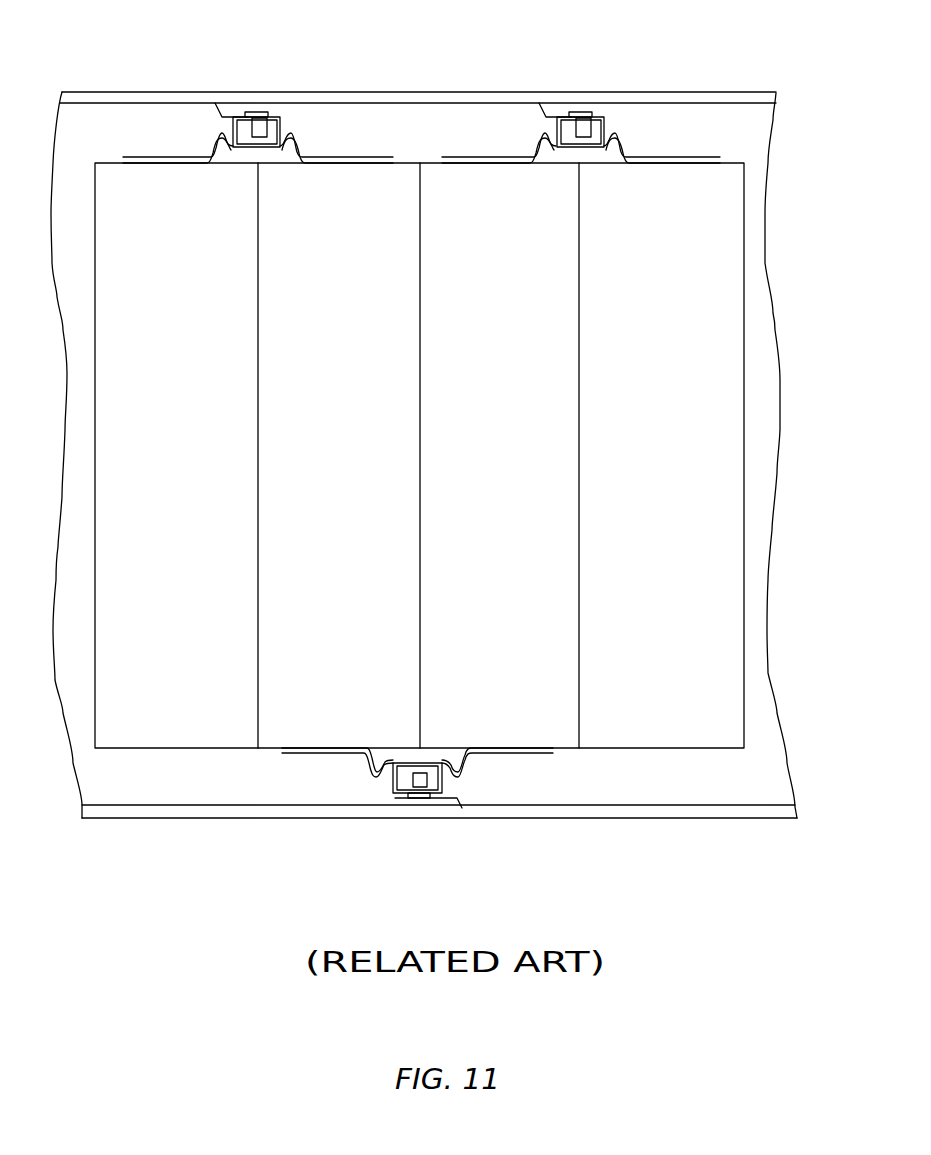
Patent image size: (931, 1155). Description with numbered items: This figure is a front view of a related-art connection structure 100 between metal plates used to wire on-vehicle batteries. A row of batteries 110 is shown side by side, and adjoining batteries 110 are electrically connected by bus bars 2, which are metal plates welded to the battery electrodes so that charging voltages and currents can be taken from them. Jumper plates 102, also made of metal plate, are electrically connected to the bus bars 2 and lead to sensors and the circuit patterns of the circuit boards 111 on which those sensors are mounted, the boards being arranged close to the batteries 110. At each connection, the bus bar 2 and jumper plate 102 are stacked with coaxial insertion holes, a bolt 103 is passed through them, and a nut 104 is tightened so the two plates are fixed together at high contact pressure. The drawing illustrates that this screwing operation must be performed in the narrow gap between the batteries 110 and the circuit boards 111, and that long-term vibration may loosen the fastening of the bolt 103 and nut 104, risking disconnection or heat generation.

The bus bar 2 is at (362, 157).
The connection structure 100 is at (716, 317).
The jumper plate 102 is at (217, 104).
The bolt 103 is at (257, 112).
The nut 104 is at (262, 130).
The battery 110 is at (552, 502).
The circuit board 111 is at (744, 97).